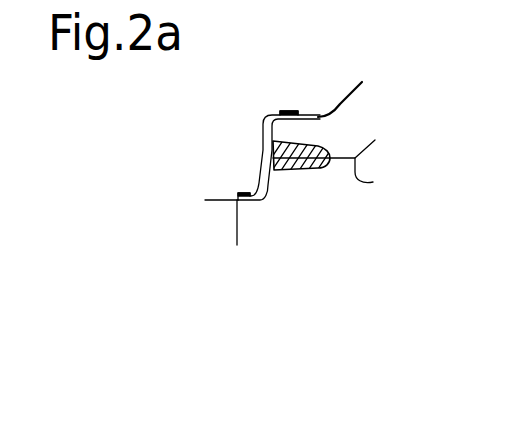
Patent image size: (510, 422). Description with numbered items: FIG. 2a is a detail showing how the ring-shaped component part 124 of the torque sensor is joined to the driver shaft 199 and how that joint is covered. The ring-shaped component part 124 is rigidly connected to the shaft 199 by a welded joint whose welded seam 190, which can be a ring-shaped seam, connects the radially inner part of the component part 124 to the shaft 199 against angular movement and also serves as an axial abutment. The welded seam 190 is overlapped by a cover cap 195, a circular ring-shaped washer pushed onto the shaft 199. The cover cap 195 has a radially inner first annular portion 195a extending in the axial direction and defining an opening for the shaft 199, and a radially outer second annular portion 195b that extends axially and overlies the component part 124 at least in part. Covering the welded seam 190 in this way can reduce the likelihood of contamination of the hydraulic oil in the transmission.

The cover cap 195 is at (265, 157).
The radially inner first annular portion 195a is at (252, 200).
The radially outer second annular portion 195b is at (287, 111).
The ring-shaped component part 124 is at (343, 122).
The welded seam 190 is at (303, 169).
The driver shaft 199 is at (345, 177).